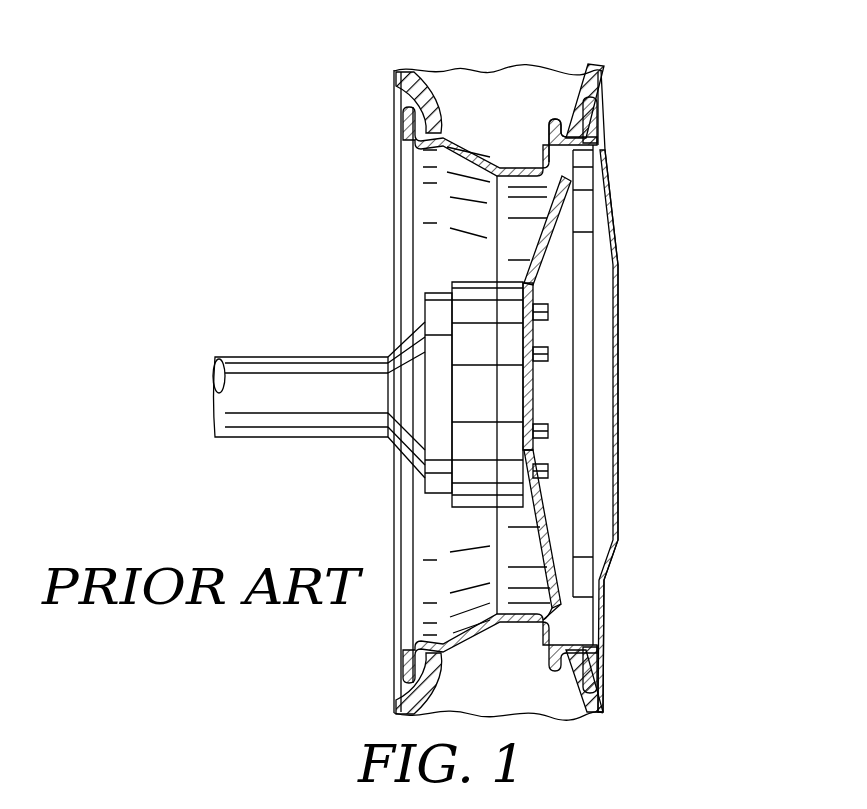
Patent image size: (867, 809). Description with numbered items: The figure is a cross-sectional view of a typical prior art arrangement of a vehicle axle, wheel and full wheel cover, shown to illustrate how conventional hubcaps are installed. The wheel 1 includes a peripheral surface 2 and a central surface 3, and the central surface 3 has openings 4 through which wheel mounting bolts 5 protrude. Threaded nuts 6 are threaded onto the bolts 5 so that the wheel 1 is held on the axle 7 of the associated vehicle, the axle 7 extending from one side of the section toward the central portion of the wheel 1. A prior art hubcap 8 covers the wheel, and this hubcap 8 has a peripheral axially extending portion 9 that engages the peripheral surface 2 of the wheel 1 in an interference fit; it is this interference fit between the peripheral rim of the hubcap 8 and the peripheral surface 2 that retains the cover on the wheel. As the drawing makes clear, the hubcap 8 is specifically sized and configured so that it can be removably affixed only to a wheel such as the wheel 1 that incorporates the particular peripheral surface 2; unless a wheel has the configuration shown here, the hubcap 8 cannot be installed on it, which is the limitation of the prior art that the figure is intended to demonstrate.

The wheel 1 is at (471, 229).
The peripheral surface 2 is at (593, 137).
The central surface 3 is at (580, 473).
The openings 4 is at (545, 446).
The wheel mounting bolts 5 is at (580, 473).
The threaded nuts 6 is at (549, 315).
The axle 7 is at (338, 420).
The hubcap 8 is at (617, 380).
The peripheral axially extending portion 9 is at (563, 132).